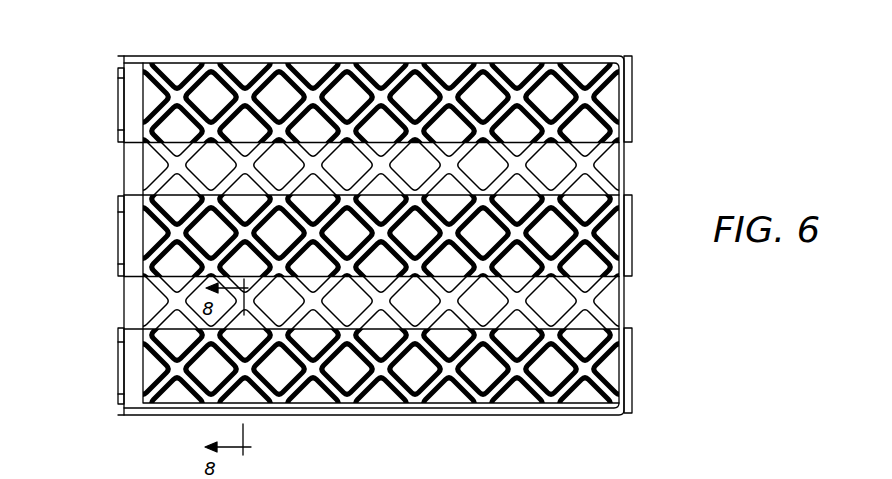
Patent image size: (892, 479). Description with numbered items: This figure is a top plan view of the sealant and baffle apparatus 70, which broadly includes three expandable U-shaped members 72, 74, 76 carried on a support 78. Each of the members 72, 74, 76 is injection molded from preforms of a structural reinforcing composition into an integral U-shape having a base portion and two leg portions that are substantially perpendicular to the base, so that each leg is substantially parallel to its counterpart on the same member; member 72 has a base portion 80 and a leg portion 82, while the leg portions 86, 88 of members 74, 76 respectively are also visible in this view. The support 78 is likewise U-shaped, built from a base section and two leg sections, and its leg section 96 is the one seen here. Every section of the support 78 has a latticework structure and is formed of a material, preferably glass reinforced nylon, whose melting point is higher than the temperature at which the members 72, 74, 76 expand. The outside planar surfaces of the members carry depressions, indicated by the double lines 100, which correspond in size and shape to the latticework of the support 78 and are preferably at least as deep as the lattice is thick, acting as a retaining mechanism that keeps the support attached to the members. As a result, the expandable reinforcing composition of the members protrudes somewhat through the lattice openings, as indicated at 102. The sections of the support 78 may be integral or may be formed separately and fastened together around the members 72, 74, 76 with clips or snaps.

The sealant and baffle apparatus 70 is at (75, 158).
The U-shaped member 72 is at (92, 365).
The U-shaped member 74 is at (97, 233).
The U-shaped member 76 is at (85, 101).
The support 78 is at (631, 142).
The base portion 80 is at (111, 331).
The leg portion 82 is at (578, 334).
The leg portion 86 is at (598, 226).
The leg portion 88 is at (600, 90).
The leg section 96 is at (620, 294).
The depressions 100 is at (414, 239).
The protruding expandable composition 102 is at (108, 82).